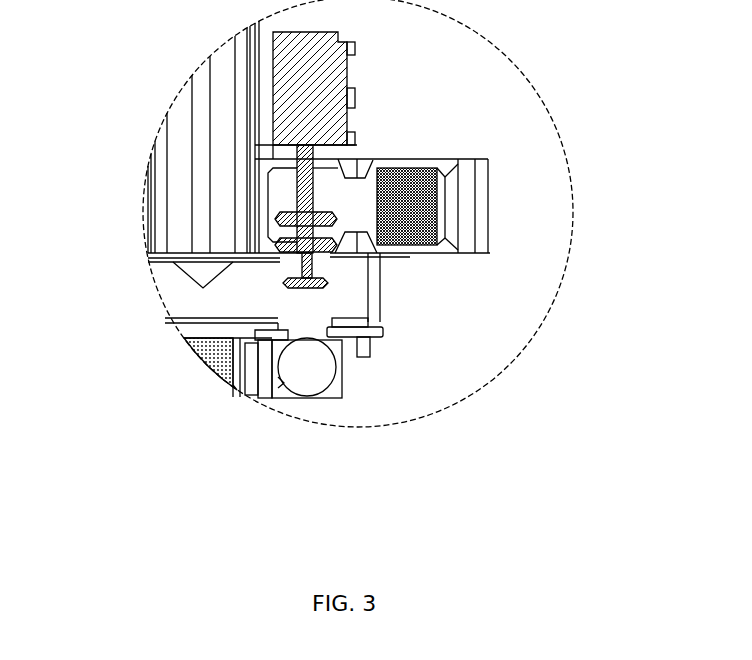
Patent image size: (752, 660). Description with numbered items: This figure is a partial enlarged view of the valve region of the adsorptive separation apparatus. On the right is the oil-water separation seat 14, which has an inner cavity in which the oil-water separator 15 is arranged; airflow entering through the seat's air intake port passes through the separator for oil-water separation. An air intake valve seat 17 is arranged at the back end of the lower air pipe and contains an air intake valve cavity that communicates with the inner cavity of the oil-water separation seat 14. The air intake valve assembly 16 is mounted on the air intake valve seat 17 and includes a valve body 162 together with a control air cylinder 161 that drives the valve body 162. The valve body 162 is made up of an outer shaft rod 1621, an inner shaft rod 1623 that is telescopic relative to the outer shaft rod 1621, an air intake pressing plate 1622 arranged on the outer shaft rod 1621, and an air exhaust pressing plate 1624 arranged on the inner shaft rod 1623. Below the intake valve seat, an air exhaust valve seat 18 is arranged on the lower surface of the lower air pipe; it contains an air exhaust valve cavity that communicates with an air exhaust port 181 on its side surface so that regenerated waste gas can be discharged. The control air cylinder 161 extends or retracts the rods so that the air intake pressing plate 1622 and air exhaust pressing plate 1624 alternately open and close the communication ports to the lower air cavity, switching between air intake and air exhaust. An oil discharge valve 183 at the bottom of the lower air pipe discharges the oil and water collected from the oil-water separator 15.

The oil-water separation seat 14 is at (473, 158).
The oil-water separator 15 is at (443, 213).
The air intake valve assembly 16 is at (323, 262).
The air intake valve seat 17 is at (270, 193).
The air exhaust valve seat 18 is at (277, 402).
The control air cylinder 161 is at (347, 73).
The valve body 162 is at (180, 228).
The outer shaft rod 1621 is at (202, 199).
The air intake pressing plate 1622 is at (203, 247).
The inner shaft rod 1623 is at (192, 268).
The air exhaust pressing plate 1624 is at (201, 295).
The air exhaust port 181 is at (325, 390).
The oil discharge valve 183 is at (383, 337).